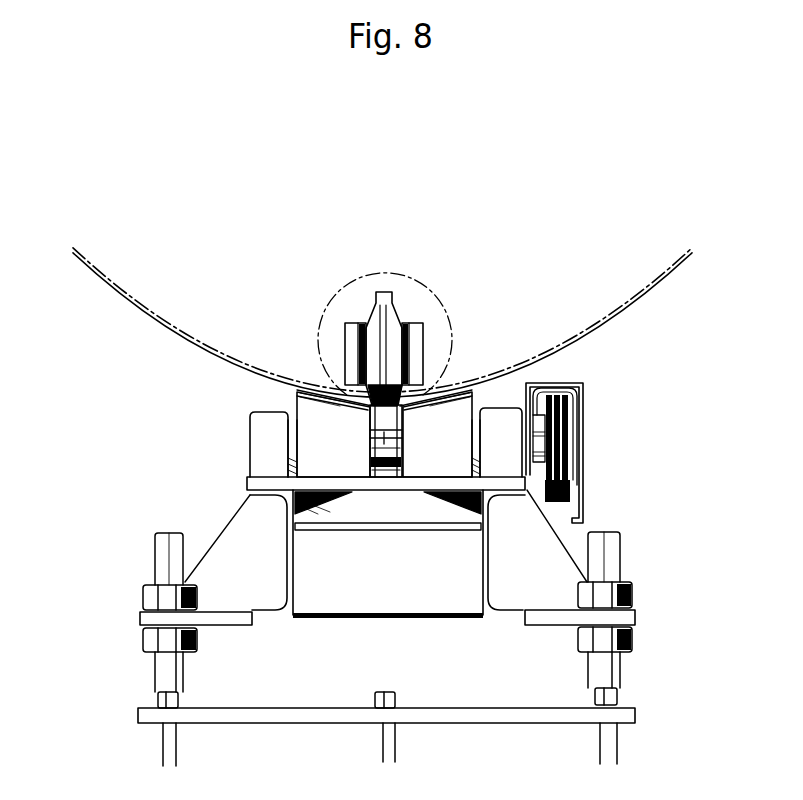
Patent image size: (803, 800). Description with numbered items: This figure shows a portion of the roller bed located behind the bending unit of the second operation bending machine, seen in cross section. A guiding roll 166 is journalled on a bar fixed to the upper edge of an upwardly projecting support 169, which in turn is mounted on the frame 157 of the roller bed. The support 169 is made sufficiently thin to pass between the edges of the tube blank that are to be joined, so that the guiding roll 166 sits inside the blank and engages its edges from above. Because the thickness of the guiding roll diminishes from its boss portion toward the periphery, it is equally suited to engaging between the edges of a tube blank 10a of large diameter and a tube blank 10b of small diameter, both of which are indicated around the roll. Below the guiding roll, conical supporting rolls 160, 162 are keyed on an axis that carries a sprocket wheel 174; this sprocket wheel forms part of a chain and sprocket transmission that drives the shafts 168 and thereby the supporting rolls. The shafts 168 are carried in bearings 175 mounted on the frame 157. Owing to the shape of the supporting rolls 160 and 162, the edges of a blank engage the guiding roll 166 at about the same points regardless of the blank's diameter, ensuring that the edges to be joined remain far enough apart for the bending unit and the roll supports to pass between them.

The tube blank of large diameter 10a is at (138, 312).
The tube blank of small diameter 10b is at (447, 308).
The guiding roll 166 is at (383, 296).
The upwardly projecting support 169 is at (388, 426).
The conical supporting roll 160 is at (298, 412).
The bearing 175 is at (258, 442).
The sprocket wheel 174 is at (566, 452).
The shaft 168 is at (376, 462).
The conical supporting roll 162 is at (462, 500).
The frame 157 is at (299, 556).